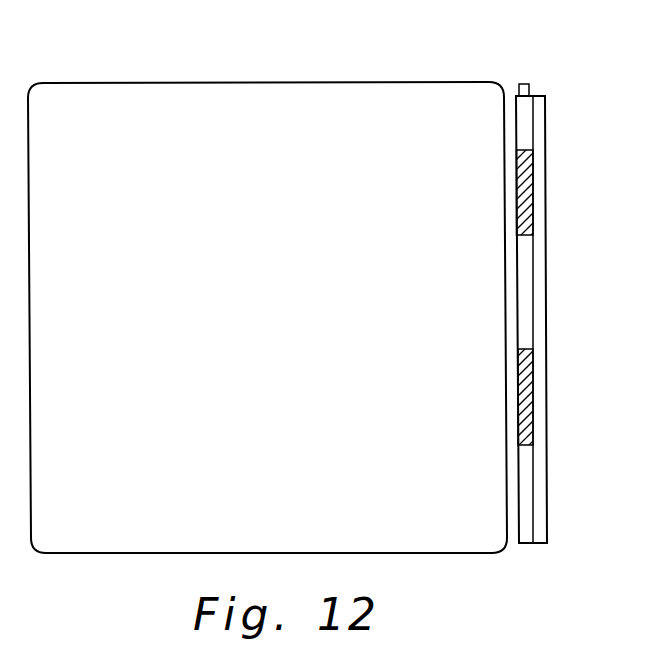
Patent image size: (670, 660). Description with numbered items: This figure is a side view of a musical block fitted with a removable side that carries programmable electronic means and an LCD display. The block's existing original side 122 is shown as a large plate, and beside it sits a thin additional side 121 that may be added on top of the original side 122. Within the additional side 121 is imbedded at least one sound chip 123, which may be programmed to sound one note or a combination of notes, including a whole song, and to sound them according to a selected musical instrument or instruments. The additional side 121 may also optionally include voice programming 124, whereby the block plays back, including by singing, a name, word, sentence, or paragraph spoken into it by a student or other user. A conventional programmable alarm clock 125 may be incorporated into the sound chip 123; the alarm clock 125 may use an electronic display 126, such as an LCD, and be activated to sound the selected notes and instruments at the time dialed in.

The additional side 121 is at (522, 543).
The original side 122 is at (289, 82).
The sound chip 123 is at (533, 205).
The voice programming 124 is at (533, 384).
The programmable alarm clock 125 is at (530, 85).
The electronic display 126 is at (542, 137).